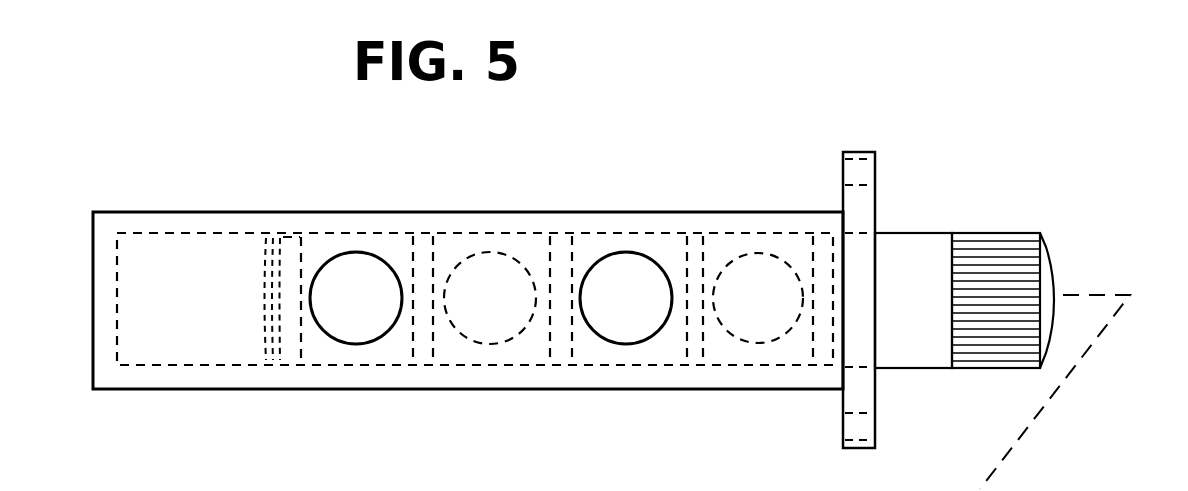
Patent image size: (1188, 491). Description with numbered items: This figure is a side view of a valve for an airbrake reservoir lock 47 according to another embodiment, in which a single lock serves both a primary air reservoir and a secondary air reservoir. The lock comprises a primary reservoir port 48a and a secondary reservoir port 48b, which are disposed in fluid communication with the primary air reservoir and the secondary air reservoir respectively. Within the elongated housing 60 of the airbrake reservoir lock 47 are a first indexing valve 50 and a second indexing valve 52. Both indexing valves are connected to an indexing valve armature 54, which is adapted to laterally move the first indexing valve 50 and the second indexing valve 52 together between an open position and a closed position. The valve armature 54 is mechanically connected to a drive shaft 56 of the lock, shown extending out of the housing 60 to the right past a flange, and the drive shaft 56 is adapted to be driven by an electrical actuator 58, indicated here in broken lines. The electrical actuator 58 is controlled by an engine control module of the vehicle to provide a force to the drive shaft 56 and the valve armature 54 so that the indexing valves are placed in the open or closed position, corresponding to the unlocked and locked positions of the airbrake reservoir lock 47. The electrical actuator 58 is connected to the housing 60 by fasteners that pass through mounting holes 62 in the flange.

The airbrake reservoir lock 47 is at (667, 110).
The primary reservoir port 48a is at (355, 283).
The secondary reservoir port 48b is at (625, 277).
The first indexing valve 50 is at (495, 275).
The second indexing valve 52 is at (772, 275).
The indexing valve armature 54 is at (265, 292).
The drive shaft 56 is at (990, 233).
The electrical actuator 58 is at (1080, 489).
The housing 60 is at (173, 391).
The mounting holes 62 is at (868, 168).